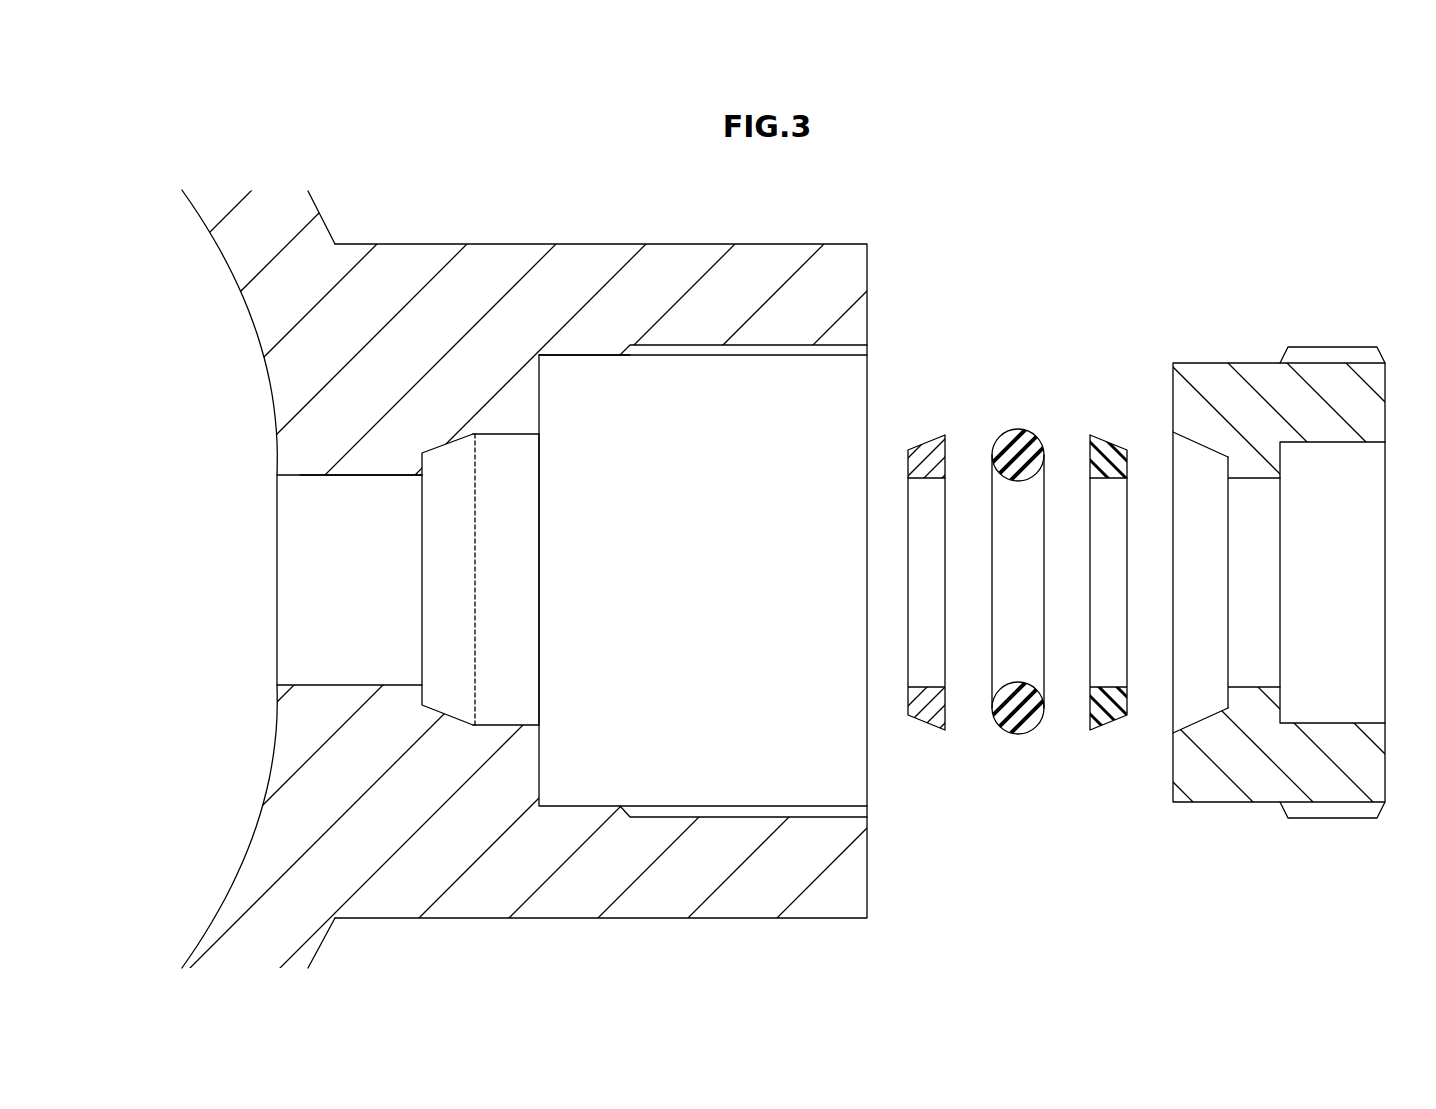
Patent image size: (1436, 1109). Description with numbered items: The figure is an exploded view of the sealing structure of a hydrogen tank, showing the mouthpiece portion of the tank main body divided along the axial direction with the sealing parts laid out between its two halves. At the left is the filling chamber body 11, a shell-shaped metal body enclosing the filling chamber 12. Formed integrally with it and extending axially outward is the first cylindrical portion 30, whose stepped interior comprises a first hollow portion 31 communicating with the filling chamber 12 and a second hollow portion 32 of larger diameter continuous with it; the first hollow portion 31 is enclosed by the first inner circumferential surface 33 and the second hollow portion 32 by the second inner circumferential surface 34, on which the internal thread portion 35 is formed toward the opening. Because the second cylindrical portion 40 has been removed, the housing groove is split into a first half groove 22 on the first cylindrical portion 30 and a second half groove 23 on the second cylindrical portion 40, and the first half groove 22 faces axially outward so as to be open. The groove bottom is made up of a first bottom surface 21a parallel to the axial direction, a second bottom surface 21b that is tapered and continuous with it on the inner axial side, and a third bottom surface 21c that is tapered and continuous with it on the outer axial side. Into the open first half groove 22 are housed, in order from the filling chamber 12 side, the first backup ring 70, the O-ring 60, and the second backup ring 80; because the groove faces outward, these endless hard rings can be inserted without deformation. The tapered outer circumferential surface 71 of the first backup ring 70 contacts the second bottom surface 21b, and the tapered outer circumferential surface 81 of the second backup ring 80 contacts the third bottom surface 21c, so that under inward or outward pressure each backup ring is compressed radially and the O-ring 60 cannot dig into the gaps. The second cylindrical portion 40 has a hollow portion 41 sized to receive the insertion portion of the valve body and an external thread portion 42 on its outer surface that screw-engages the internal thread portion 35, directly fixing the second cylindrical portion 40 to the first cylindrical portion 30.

The filling chamber body 11 is at (318, 203).
The filling chamber 12 is at (208, 597).
The first cylindrical portion 30 is at (605, 236).
The first hollow portion 31 is at (385, 595).
The second hollow portion 32 is at (656, 597).
The first inner circumferential surface 33 is at (352, 478).
The second inner circumferential surface 34 is at (593, 357).
The internal thread portion 35 is at (749, 347).
The first half groove 22 is at (480, 579).
The first bottom surface 21a is at (497, 724).
The second bottom surface 21b is at (449, 714).
The third bottom surface 21c is at (1202, 715).
The second half groove 23 is at (1225, 487).
The second cylindrical portion 40 is at (1063, 509).
The hollow portion 41 is at (1292, 597).
The external thread portion 42 is at (1337, 344).
The O-ring 60 is at (1030, 747).
The first backup ring 70 is at (933, 737).
The outer circumferential surface 71 is at (925, 448).
The second backup ring 80 is at (1108, 736).
The outer circumferential surface 81 is at (1107, 443).